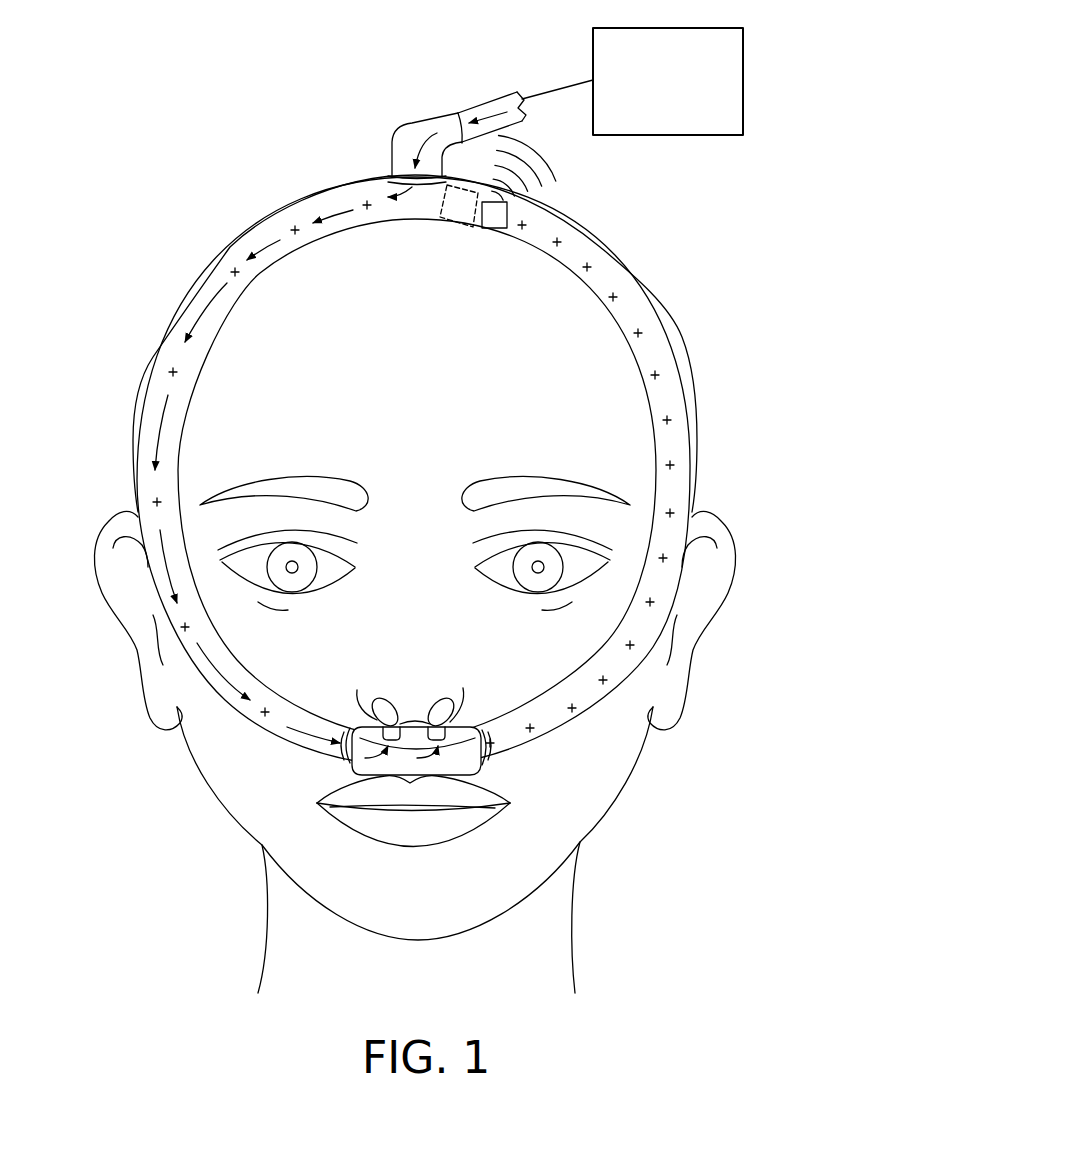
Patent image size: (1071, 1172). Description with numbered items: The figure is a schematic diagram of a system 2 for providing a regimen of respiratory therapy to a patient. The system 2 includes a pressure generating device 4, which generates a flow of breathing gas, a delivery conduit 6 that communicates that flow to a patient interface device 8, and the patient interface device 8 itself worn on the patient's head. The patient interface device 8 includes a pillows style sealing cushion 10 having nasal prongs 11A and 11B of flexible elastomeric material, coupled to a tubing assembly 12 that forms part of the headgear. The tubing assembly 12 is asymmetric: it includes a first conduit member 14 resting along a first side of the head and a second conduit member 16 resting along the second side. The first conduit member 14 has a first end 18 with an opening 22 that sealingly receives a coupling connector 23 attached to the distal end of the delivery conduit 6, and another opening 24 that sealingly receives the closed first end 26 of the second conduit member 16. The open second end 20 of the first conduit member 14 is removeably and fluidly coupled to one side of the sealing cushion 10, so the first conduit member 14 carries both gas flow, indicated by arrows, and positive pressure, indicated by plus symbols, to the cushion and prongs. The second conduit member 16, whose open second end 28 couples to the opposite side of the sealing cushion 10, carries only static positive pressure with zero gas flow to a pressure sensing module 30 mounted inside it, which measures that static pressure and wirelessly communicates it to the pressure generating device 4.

The system 2 is at (441, 97).
The pressure generating device 4 is at (743, 82).
The delivery conduit 6 is at (527, 123).
The patient interface device 8 is at (292, 760).
The pillows style sealing cushion 10 is at (458, 730).
The nasal prong 11A is at (380, 710).
The nasal prong 11B is at (447, 708).
The tubing assembly 12 is at (363, 174).
The first conduit member 14 is at (177, 355).
The second conduit member 16 is at (660, 357).
The first end 18 is at (380, 222).
The second end 20 is at (340, 750).
The opening 22 is at (444, 175).
The coupling connector 23 is at (403, 130).
The opening 24 is at (477, 233).
The first end 26 is at (488, 229).
The second end 28 is at (482, 757).
The pressure sensing module 30 is at (508, 216).